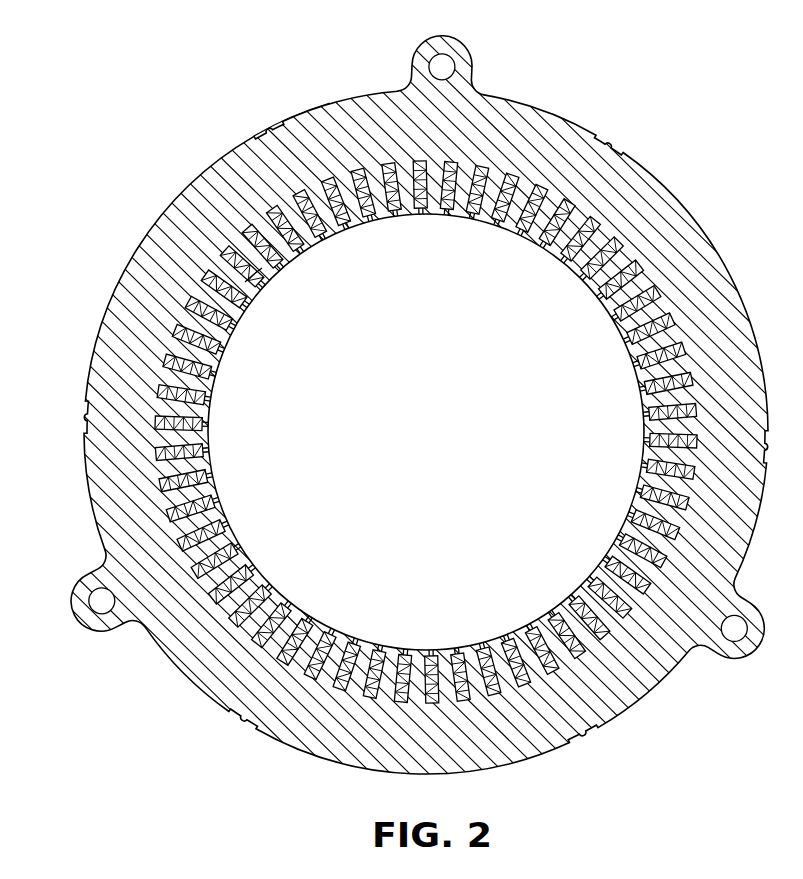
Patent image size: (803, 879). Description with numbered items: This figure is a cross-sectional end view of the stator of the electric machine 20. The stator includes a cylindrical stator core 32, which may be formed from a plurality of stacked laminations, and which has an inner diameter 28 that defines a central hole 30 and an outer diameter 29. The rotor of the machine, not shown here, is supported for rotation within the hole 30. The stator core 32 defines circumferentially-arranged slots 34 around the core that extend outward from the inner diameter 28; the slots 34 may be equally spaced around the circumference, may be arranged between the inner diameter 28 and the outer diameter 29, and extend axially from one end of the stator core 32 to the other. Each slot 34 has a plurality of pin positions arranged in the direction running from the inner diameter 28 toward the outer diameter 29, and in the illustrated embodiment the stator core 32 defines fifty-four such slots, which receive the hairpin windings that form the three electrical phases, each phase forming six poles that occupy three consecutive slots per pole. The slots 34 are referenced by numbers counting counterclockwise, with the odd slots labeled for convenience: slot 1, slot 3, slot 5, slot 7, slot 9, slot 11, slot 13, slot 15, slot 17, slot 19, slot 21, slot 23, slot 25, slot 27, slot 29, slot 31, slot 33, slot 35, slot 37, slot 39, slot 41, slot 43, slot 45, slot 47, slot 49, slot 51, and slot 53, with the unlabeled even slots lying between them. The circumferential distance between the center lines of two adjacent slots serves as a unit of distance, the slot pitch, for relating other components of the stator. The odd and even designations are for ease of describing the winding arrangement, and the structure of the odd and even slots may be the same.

The electric machine 20 is at (401, 439).
The stator core 32 is at (680, 197).
The outer diameter 29 is at (237, 66).
The inner diameter 28 is at (262, 268).
The hole 30 is at (416, 448).
The slots 34 is at (348, 240).
The slot 3 is at (507, 75).
The slot 1 is at (477, 203).
The slot 5 is at (365, 204).
The slot 7 is at (314, 224).
The slot 9 is at (269, 254).
The slot 11 is at (235, 295).
The slot 13 is at (209, 343).
The slot 15 is at (195, 397).
The slot 17 is at (192, 449).
The slot 19 is at (203, 503).
The slot 21 is at (225, 553).
The slot 23 is at (259, 596).
The slot 25 is at (301, 631).
The slot 27 is at (351, 654).
The slot 31 is at (456, 664).
The slot 33 is at (509, 651).
The slot 35 is at (558, 626).
The slot 37 is at (600, 590).
The slot 39 is at (631, 545).
The slot 41 is at (651, 494).
The slot 43 is at (659, 441).
The slot 45 is at (655, 387).
The slot 47 is at (639, 335).
The slot 49 is at (611, 288).
The slot 51 is at (573, 249).
The slot 53 is at (526, 220).